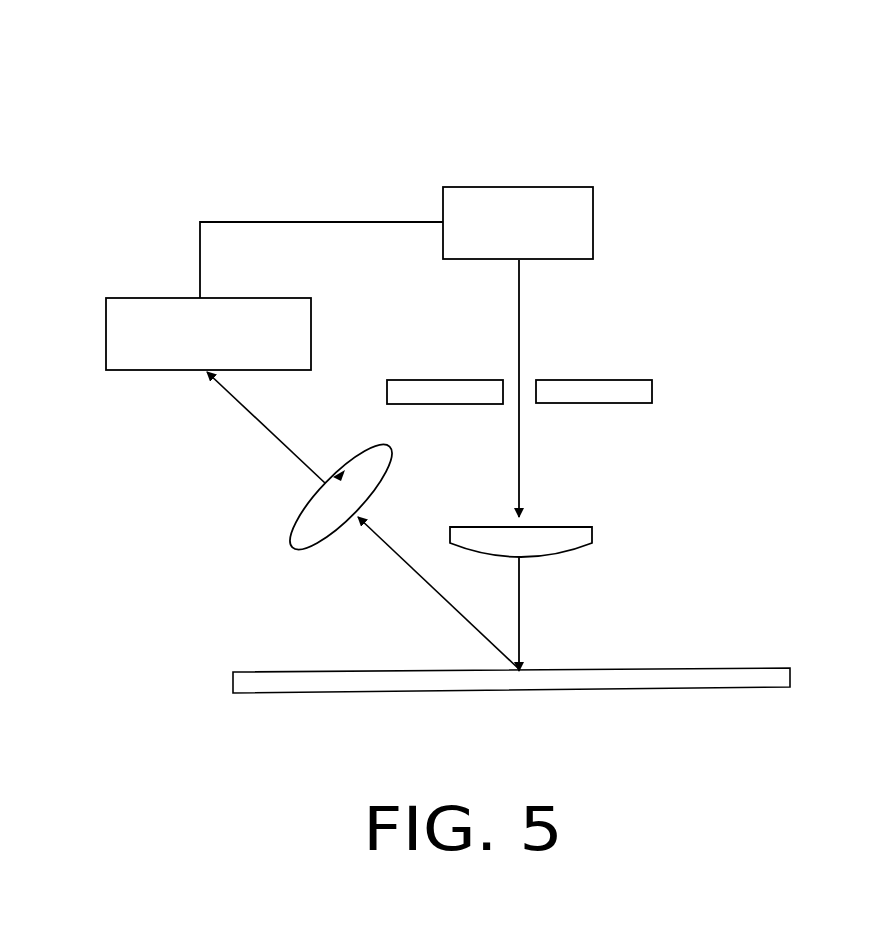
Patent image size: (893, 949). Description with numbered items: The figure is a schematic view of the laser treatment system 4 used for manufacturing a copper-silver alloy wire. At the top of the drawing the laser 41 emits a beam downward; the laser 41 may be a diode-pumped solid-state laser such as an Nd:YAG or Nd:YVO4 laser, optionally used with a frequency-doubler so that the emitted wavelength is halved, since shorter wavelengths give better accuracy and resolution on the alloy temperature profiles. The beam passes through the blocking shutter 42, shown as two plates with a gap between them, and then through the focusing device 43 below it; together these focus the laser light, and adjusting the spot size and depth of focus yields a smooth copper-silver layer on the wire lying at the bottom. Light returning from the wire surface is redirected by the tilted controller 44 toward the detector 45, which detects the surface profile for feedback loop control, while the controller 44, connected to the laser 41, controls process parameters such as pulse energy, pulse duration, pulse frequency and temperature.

The laser treatment system 4 is at (463, 46).
The laser 41 is at (553, 193).
The blocking shutter 42 is at (618, 392).
The focusing device 43 is at (563, 535).
The controller 44 is at (315, 523).
The detector 45 is at (133, 307).